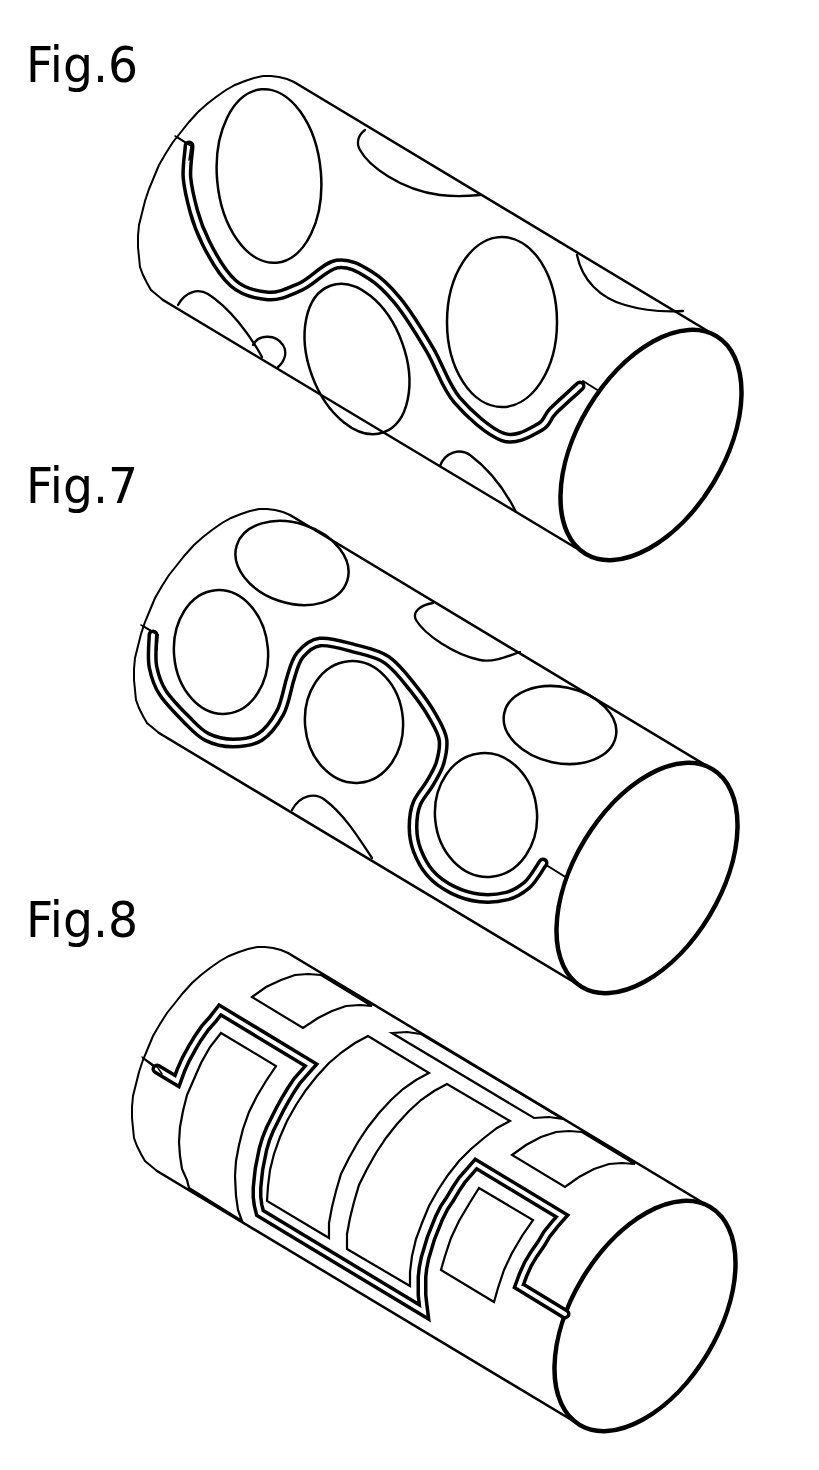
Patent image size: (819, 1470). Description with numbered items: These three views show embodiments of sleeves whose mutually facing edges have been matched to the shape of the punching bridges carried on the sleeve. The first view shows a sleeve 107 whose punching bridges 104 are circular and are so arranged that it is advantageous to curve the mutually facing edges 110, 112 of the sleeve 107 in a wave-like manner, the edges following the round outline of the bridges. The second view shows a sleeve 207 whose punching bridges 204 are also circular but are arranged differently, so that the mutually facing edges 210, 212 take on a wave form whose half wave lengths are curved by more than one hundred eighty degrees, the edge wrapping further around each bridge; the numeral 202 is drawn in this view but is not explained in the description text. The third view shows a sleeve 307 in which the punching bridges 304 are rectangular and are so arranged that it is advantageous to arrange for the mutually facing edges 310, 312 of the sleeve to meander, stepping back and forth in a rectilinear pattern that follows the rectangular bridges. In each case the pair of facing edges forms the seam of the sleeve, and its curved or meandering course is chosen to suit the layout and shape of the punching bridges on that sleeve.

In FIG. 6, the punching bridges 104 is at (320, 143).
In FIG. 6, the sleeve 107 is at (556, 237).
In FIG. 6, the mutually facing edge 110 is at (198, 184).
In FIG. 6, the mutually facing edge 112 is at (192, 213).
In FIG. 7, the openings in electrode 202 is at (247, 712).
In FIG. 7, the punching bridges 204 is at (382, 642).
In FIG. 7, the sleeve 207 is at (578, 684).
In FIG. 7, the mutually facing edge 210 is at (157, 662).
In FIG. 7, the mutually facing edge 212 is at (160, 686).
In FIG. 8, the punching bridges 304 is at (177, 1153).
In FIG. 8, the sleeve 307 is at (618, 1150).
In FIG. 8, the mutually facing edge 310 is at (164, 1068).
In FIG. 8, the mutually facing edge 312 is at (163, 1076).